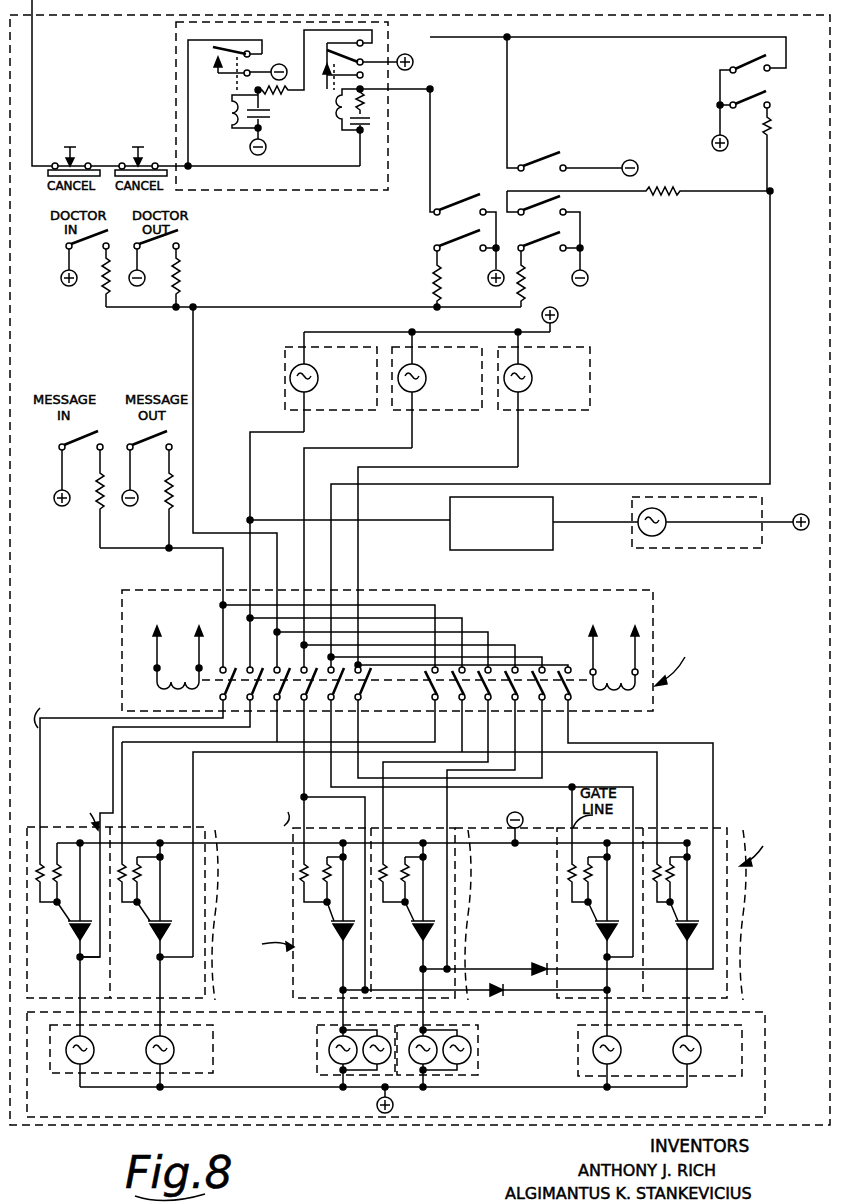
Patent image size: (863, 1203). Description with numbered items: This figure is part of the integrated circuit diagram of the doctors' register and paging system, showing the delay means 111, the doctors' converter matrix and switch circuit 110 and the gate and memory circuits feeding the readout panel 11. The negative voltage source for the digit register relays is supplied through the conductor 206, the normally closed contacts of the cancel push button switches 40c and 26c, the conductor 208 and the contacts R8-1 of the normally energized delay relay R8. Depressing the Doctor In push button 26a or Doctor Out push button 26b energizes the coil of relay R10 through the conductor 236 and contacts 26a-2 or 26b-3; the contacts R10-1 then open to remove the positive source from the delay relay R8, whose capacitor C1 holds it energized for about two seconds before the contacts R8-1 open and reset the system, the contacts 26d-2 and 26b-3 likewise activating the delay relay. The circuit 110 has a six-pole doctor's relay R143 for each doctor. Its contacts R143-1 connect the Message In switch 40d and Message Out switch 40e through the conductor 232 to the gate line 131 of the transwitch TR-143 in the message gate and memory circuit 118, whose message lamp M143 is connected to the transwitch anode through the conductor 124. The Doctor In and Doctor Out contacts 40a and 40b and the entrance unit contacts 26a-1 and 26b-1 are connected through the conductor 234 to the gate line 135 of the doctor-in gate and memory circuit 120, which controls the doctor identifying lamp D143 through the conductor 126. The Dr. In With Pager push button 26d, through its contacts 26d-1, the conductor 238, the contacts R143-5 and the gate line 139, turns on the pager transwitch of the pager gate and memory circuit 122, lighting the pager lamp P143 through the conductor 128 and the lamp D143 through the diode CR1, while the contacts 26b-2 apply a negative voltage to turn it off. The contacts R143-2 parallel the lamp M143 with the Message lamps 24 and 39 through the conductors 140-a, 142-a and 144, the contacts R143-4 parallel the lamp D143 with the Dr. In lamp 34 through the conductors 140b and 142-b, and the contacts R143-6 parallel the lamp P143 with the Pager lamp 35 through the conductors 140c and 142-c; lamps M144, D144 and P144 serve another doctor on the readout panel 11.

The conductor 206 is at (33, 57).
The conductor 208 is at (190, 40).
The delay means 111 is at (178, 55).
The cancel push button switch 40c is at (70, 147).
The cancel push button switch 26c is at (138, 147).
The contacts of the delay relay R8-1 is at (212, 48).
The delay relay R8 is at (232, 120).
The capacitor C1 is at (270, 113).
The contacts of relay R10 R10-1 is at (322, 58).
The relay R10 is at (324, 118).
The conductor 236 is at (380, 92).
The Doctor In push button 26a is at (430, 235).
The contacts of push button 26a 26a-2 is at (452, 218).
The contacts of push button 26a 26a-1 is at (455, 242).
The Doctor Out push button 26b is at (580, 214).
The contacts of push button 26b 26b-3 is at (578, 172).
The contacts of push button 26b 26b-2 is at (578, 222).
The contacts of push button 26b 26b-1 is at (583, 258).
The Dr. In With Pager push button 26d is at (739, 123).
The contacts of push button 26d 26d-2 is at (722, 68).
The contacts of push button 26d 26d-1 is at (724, 104).
The conductor 238 is at (697, 191).
The Doctor In push button contacts 40a is at (80, 242).
The Doctor Out push button contacts 40b is at (180, 256).
The conductor 234 is at (270, 296).
The Message window 39 is at (318, 380).
The Dr. In window 34 is at (426, 380).
The Pager window 35 is at (532, 380).
The conductor 142-a is at (285, 432).
The conductor 142-b is at (390, 448).
The conductor 142-c is at (494, 467).
The Message In push button switch 40d is at (62, 440).
The Message Out push button switch 40e is at (158, 440).
The conductor 232 is at (178, 548).
The conductor 144 is at (380, 520).
The message lamp 24 is at (668, 528).
The doctors' converter matrix and switch circuit 110 is at (456, 682).
The doctor's relay R143 is at (395, 649).
The contacts of relay R143 R143-1 is at (223, 700).
The contacts of relay R143 R143-2 is at (250, 700).
The contacts of relay R143 R143-4 is at (310, 705).
The contacts of relay R143 R143-5 is at (283, 702).
The contacts of relay R143 R143-6 is at (359, 672).
The gate line 131 is at (42, 740).
The conductor 140-a is at (113, 735).
The gate line 135 is at (270, 795).
The conductor 140b is at (366, 815).
The conductor 140c is at (638, 814).
The doctor's message gate and memory circuit 118 is at (200, 828).
The doctor-in gate and memory circuit 120 is at (436, 852).
The doctor pager gate and memory circuit 122 is at (660, 828).
The gate line 139 is at (466, 798).
The conductor 124 is at (75, 932).
The conductor 126 is at (337, 934).
The conductor 128 is at (607, 935).
The transwitch TR-143 is at (416, 921).
The diode CR1 is at (492, 985).
The message lamp M143 is at (94, 1044).
The message lamp M144 is at (174, 1044).
The doctor identifying lamp D143 is at (372, 1040).
The doctor identifying lamp D144 is at (458, 1040).
The pager lamp P143 is at (621, 1044).
The pager lamp P144 is at (700, 1044).
The readout panel 11 is at (396, 1064).